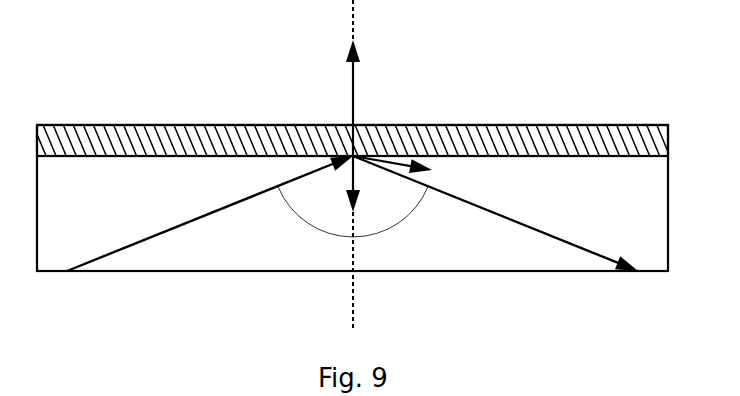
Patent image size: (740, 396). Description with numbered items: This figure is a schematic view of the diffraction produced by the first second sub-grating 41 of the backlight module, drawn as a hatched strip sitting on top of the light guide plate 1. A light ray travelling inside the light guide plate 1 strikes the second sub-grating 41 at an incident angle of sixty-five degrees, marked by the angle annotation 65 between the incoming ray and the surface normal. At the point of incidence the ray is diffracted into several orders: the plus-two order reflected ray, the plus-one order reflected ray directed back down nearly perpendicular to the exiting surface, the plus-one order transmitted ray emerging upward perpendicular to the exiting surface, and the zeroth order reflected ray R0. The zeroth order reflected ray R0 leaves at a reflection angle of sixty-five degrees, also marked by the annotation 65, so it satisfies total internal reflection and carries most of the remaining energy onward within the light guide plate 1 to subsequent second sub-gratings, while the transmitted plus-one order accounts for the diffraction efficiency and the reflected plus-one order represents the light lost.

The light guide plate 1 is at (192, 248).
The second sub-grating 41 is at (267, 143).
The angle of incidence / diffraction (65 degrees) 65 is at (350, 217).
The 0th order reflected light ray R0 is at (495, 213).